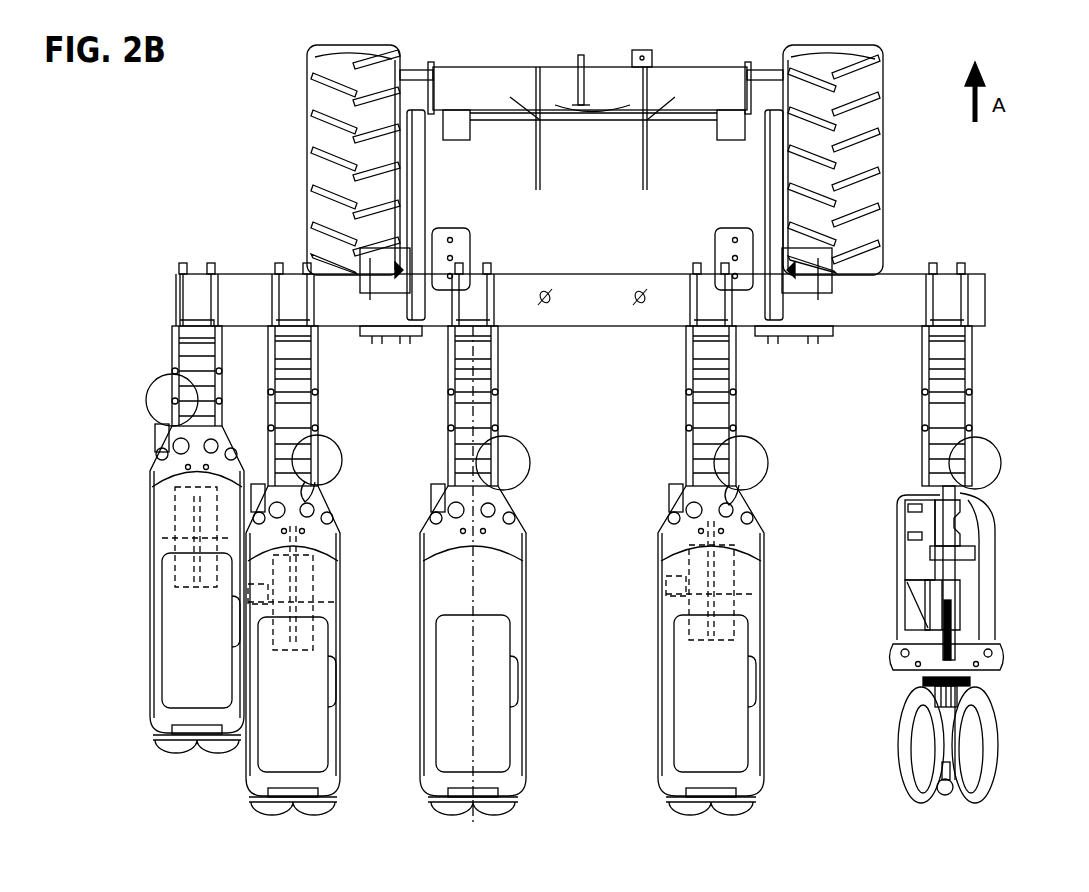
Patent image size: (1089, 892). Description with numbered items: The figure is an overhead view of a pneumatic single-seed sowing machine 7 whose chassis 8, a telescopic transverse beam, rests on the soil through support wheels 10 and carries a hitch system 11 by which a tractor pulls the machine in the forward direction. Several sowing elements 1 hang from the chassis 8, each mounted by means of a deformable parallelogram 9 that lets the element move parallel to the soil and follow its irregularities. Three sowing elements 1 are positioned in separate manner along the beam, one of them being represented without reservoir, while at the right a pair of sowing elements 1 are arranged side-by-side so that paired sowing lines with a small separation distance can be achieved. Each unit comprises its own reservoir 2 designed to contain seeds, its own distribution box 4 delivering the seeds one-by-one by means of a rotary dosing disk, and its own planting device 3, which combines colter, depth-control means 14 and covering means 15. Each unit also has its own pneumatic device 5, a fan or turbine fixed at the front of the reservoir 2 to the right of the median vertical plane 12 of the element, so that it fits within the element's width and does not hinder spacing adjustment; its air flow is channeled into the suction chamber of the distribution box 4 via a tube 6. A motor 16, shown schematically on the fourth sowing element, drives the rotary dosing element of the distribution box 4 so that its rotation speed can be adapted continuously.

The sowing element 1 is at (243, 774).
The reservoir 2 is at (768, 770).
The planting device 3 is at (660, 521).
The distribution box 4 is at (172, 515).
The pneumatic device 5 is at (157, 380).
The tube 6 is at (330, 508).
The sowing machine 7 is at (978, 268).
The chassis 8 is at (571, 270).
The deformable parallelogram 9 is at (446, 400).
The support wheels 10 is at (883, 185).
The hitch system 11 is at (576, 66).
The median vertical plane 12 is at (475, 697).
The depth-control means 14 is at (888, 612).
The covering means 15 is at (892, 740).
The motor 16 is at (674, 590).